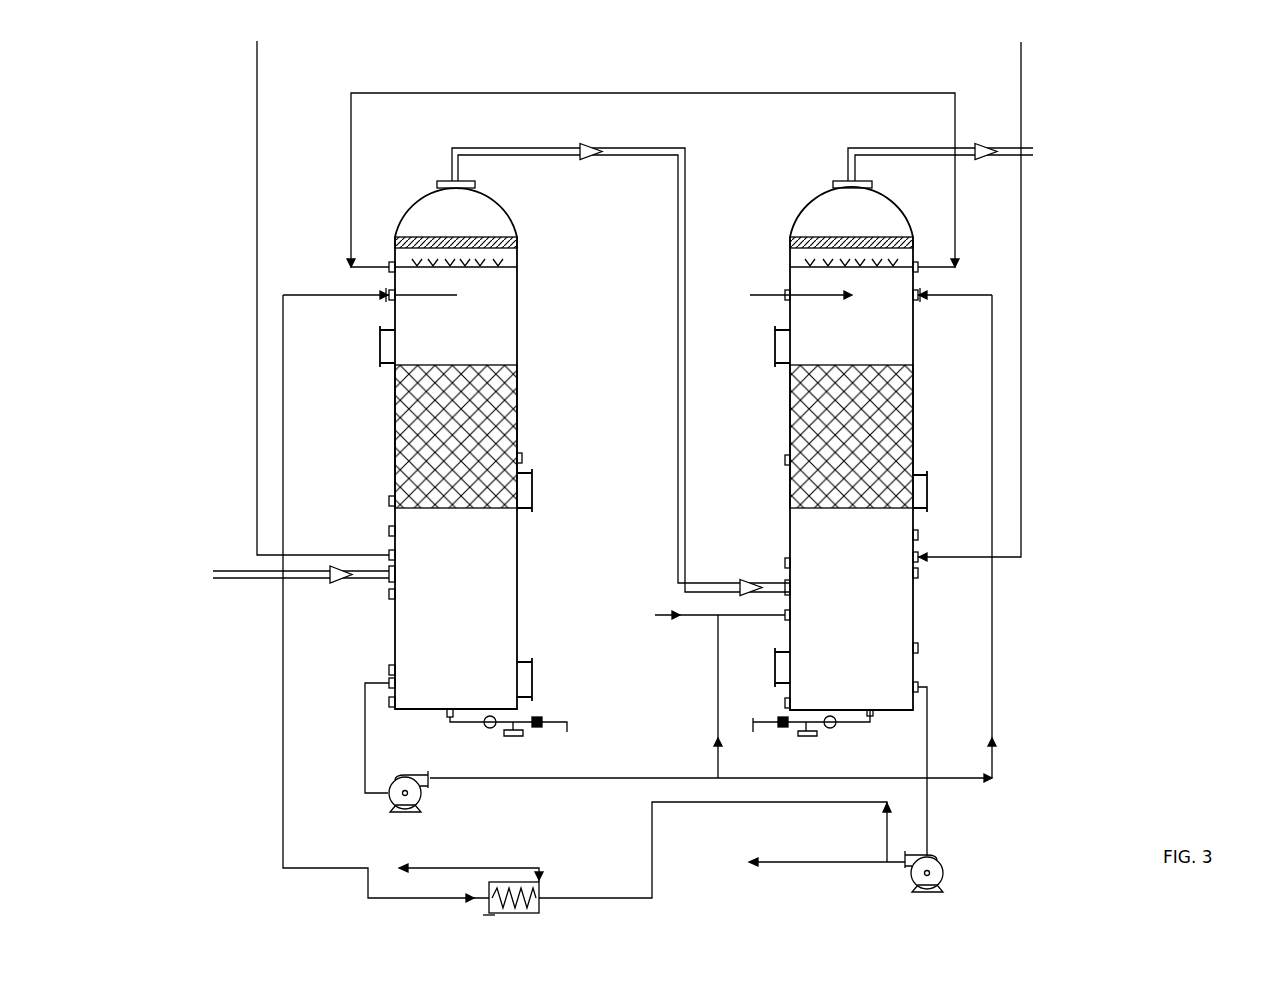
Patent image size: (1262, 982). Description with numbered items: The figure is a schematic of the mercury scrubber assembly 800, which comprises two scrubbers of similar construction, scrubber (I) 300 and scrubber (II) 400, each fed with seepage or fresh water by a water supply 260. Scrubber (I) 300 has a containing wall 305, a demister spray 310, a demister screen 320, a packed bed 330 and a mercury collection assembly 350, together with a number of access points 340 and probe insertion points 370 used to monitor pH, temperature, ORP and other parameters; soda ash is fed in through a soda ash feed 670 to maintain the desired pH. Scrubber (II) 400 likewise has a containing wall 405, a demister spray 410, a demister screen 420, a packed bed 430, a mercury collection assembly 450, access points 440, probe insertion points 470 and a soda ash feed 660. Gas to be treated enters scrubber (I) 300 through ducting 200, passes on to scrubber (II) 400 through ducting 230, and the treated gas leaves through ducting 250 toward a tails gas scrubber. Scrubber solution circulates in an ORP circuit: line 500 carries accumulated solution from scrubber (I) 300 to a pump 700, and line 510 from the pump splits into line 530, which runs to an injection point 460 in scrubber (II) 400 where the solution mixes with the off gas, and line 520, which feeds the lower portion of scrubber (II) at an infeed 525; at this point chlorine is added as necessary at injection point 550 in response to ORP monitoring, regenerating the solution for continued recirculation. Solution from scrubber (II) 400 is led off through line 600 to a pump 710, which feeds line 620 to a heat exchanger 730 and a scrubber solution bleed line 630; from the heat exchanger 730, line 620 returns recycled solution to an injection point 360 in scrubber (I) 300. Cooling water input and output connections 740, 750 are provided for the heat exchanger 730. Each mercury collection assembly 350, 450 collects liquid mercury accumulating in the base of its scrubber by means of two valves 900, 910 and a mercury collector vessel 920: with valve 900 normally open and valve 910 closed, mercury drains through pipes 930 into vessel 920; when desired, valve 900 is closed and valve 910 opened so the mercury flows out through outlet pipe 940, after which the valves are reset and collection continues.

The ducting 200 is at (260, 580).
The ducting 230 is at (692, 152).
The ducting 250 is at (1040, 148).
The water supply 260 is at (822, 93).
The scrubber (I) 300 is at (457, 473).
The containing wall 305 is at (498, 212).
The demister spray 310 is at (513, 264).
The demister screen 320 is at (514, 243).
The packed bed 330 is at (505, 408).
The access points 340 is at (378, 351).
The mercury collection assembly 350 is at (598, 711).
The injection point 360 is at (462, 298).
The probe insertion points 370 is at (391, 500).
The scrubber (II) 400 is at (851, 473).
The containing wall 405 is at (898, 214).
The demister spray 410 is at (790, 263).
The demister screen 420 is at (790, 242).
The packed bed 430 is at (900, 418).
The access points 440 is at (775, 350).
The mercury collection assembly 450 is at (753, 714).
The injection point 460 is at (857, 302).
The probe insertion points 470 is at (783, 459).
The line 500 is at (365, 745).
The line 510 is at (572, 778).
The line 520 is at (712, 658).
The infeed 525 is at (782, 612).
The line 530 is at (995, 680).
The chlorine injection point 550 is at (710, 604).
The line 600 is at (932, 822).
The line 620 is at (283, 740).
The scrubber solution bleed line 630 is at (800, 860).
The soda ash feed 660 is at (1022, 56).
The soda ash feed 670 is at (257, 157).
The first pump 700 is at (408, 791).
The pump 710 is at (945, 878).
The heat exchanger 730 is at (540, 899).
The cooling water outlet 740 is at (405, 868).
The cooling water inlet 750 is at (483, 915).
The assembly 800 is at (1192, 269).
The valve 900 is at (486, 724).
The valve 910 is at (539, 728).
The mercury collector vessel 920 is at (806, 737).
The pipes 930 is at (851, 723).
The outlet pipe 940 is at (751, 738).